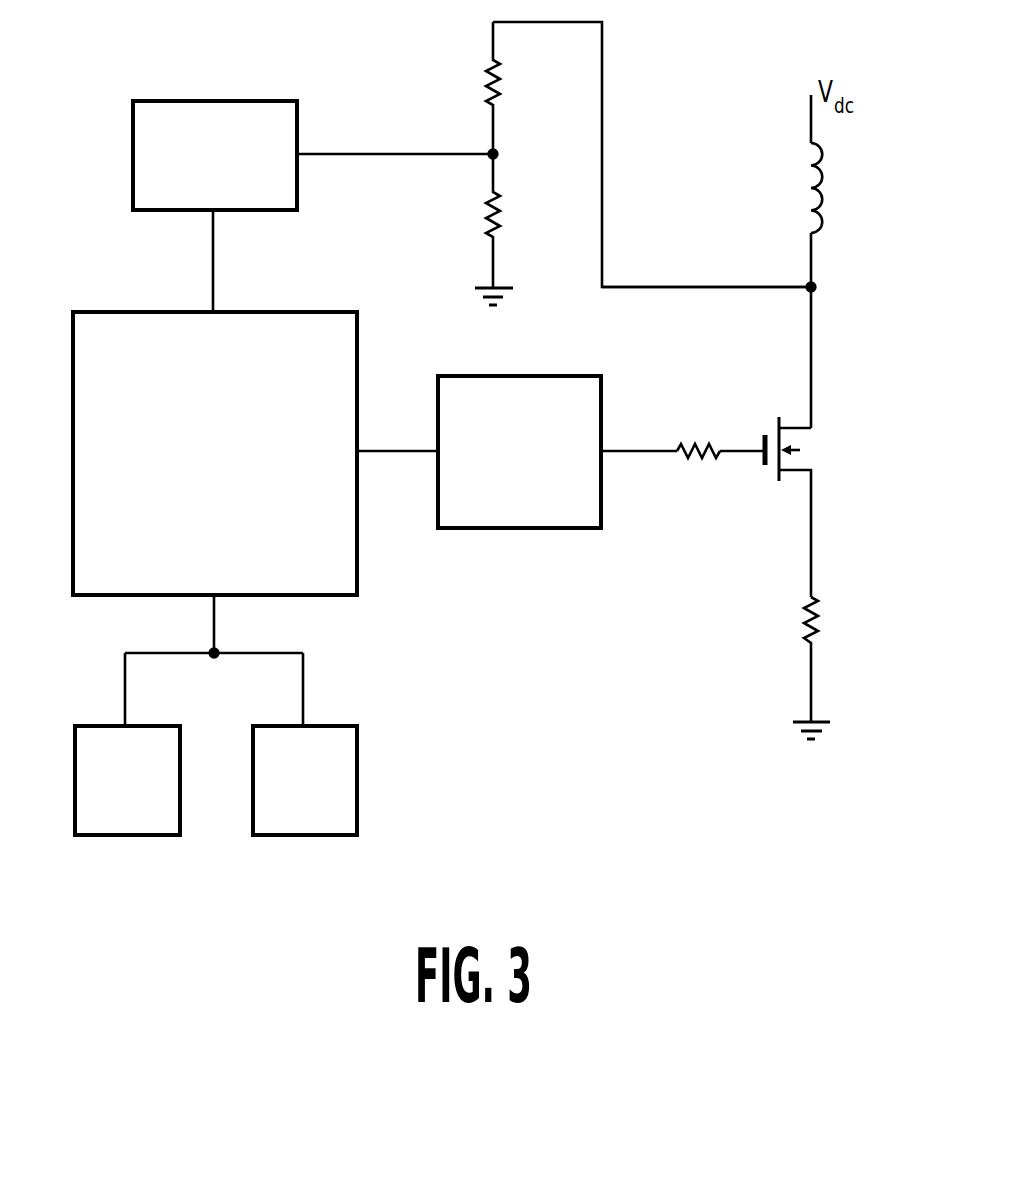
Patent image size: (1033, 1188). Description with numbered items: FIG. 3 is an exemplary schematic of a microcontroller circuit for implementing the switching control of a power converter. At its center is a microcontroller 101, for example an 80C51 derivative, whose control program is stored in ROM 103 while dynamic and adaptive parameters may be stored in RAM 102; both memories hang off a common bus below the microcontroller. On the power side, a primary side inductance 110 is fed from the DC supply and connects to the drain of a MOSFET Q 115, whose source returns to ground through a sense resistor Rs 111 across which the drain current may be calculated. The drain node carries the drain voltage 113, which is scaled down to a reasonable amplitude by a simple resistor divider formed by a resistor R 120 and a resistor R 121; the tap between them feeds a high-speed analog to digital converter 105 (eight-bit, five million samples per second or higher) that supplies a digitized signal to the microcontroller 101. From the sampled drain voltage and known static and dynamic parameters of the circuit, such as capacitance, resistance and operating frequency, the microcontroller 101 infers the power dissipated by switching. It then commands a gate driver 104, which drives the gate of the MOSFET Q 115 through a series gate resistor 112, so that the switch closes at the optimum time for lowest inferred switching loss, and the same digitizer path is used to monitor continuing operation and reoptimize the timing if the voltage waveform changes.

The microcontroller 101 is at (197, 493).
The RAM 102 is at (148, 813).
The ROM 103 is at (283, 813).
The gate driver 104 is at (500, 499).
The analog to digital converter 105 is at (197, 188).
The primary side inductance 110 is at (845, 188).
The sense resistor Rs 111 is at (797, 663).
The gate resistor RG 112 is at (698, 413).
The drain voltage 113 is at (731, 352).
The MOSFET Q 115 is at (777, 507).
The resistor R120 120 is at (469, 88).
The resistor R121 121 is at (476, 229).